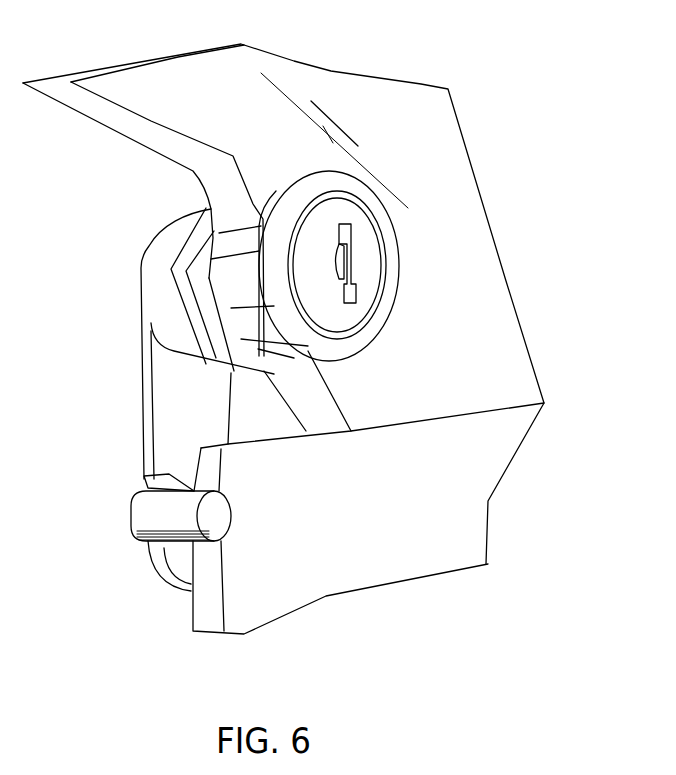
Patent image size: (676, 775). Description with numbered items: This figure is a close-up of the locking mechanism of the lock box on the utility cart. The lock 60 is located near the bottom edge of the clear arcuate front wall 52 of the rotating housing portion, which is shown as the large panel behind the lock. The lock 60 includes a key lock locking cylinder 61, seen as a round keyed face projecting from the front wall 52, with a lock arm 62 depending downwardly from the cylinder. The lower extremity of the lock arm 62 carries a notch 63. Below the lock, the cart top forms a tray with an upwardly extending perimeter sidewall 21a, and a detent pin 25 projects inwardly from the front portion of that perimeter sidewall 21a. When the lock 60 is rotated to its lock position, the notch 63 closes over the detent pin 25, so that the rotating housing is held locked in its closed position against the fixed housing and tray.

The arcuate front wall 52 is at (477, 327).
The perimeter sidewall 21a is at (347, 478).
The key lock locking cylinder 61 is at (237, 280).
The lock 60 is at (360, 252).
The lock arm 62 is at (167, 395).
The notch 63 is at (190, 487).
The detent pin 25 is at (172, 512).